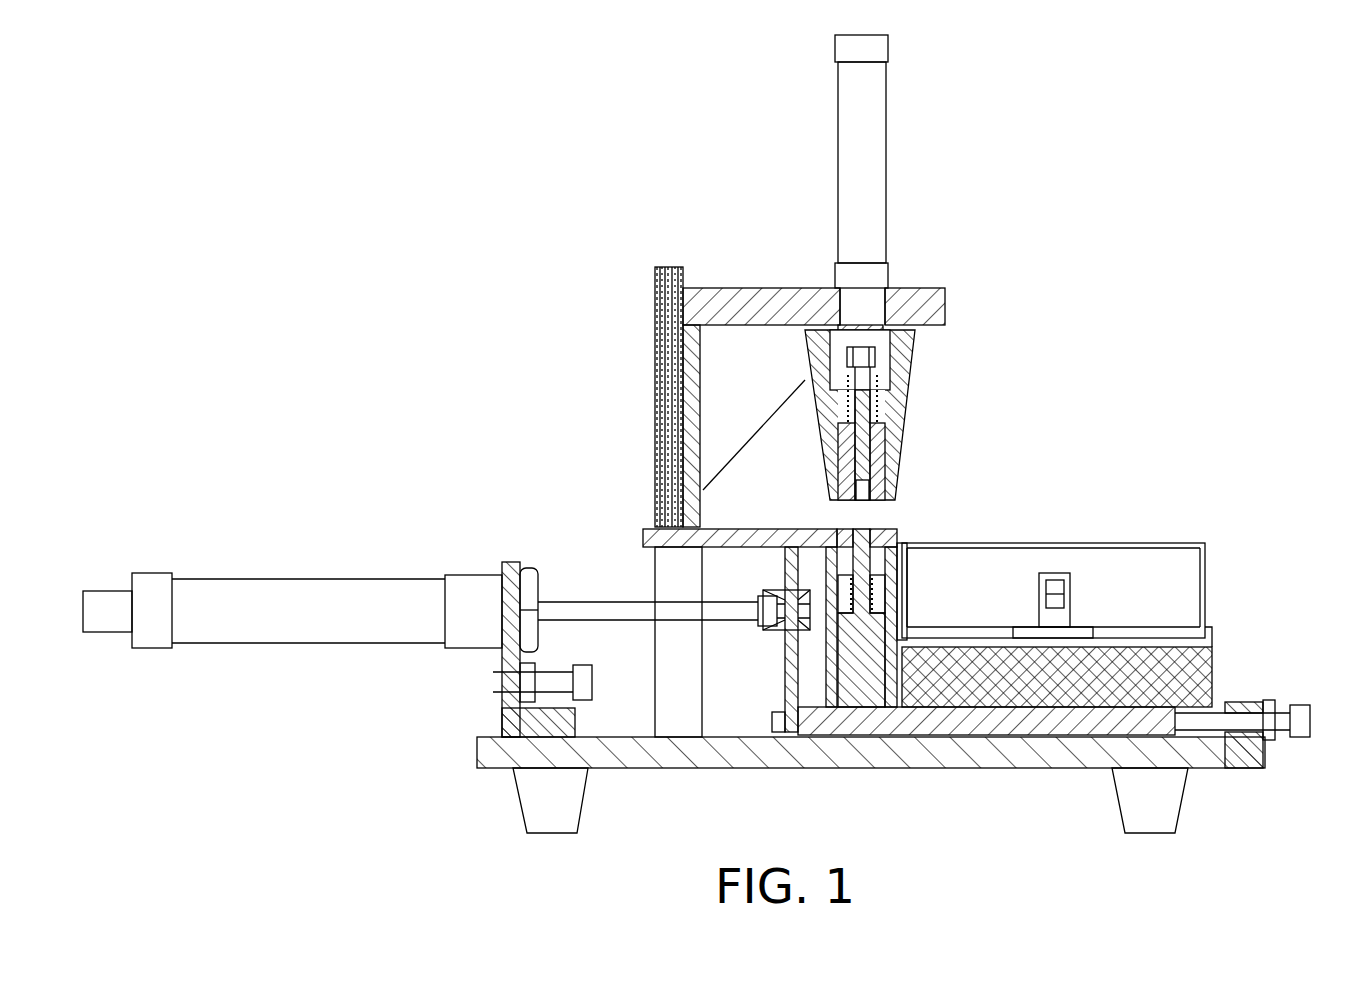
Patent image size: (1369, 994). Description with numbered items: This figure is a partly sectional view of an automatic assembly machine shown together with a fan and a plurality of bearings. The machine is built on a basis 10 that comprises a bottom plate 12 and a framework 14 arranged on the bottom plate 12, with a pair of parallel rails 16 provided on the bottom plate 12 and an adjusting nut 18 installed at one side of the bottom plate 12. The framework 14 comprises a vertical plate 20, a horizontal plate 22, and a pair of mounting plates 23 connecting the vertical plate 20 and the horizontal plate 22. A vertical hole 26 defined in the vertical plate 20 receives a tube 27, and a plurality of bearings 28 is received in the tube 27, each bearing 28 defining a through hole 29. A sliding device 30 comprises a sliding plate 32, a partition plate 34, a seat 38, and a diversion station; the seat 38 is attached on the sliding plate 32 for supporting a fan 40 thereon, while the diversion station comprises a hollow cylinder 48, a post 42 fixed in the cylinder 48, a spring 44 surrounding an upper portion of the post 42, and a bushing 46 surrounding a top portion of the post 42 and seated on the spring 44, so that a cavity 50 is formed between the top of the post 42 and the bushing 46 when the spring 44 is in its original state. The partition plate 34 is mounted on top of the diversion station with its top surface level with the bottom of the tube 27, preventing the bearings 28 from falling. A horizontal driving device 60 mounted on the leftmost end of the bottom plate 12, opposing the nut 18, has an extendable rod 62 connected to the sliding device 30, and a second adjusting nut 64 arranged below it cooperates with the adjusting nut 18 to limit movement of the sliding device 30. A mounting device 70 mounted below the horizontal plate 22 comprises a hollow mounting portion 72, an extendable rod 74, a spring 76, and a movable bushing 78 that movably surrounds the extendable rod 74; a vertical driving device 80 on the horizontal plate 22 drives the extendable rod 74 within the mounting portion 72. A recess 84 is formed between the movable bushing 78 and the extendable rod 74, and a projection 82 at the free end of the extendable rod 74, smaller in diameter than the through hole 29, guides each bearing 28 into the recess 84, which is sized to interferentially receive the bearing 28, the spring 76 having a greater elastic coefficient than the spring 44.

The basis 10 is at (1010, 778).
The bottom plate 12 is at (673, 768).
The framework 14 is at (815, 305).
The rails 16 is at (940, 745).
The adjusting nut 18 is at (1300, 715).
The vertical plate 20 is at (635, 365).
The horizontal plate 22 is at (930, 318).
The mounting plates 23 is at (766, 343).
The vertical hole 26 is at (690, 300).
The tube 27 is at (655, 295).
The bearings 28 is at (655, 272).
The through hole 29 is at (670, 268).
The sliding device 30 is at (1104, 579).
The sliding plate 32 is at (1077, 722).
The partition plate 34 is at (735, 537).
The seat 38 is at (1195, 678).
The fan 40 is at (1175, 598).
The post 42 is at (857, 683).
The spring 44 is at (925, 600).
The bushing 46 is at (905, 560).
The hollow cylinder 48 is at (830, 667).
The cavity 50 is at (870, 540).
The horizontal driving device 60 is at (298, 552).
The extendable rod 62 is at (595, 608).
The second adjusting nut 64 is at (567, 683).
The mounting device 70 is at (913, 413).
The mounting portion 72 is at (905, 340).
The extendable rod 74 is at (905, 402).
The spring 76 is at (905, 425).
The movable bushing 78 is at (900, 457).
The vertical driving device 80 is at (910, 122).
The projection 82 is at (900, 495).
The recess 84 is at (868, 540).